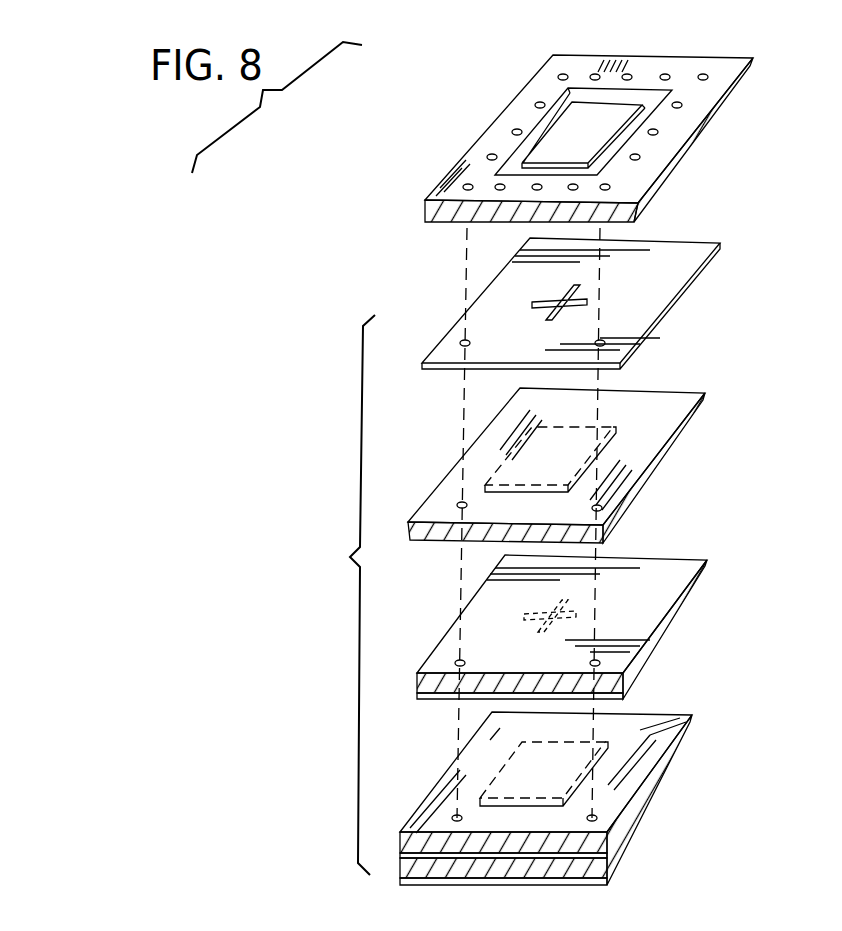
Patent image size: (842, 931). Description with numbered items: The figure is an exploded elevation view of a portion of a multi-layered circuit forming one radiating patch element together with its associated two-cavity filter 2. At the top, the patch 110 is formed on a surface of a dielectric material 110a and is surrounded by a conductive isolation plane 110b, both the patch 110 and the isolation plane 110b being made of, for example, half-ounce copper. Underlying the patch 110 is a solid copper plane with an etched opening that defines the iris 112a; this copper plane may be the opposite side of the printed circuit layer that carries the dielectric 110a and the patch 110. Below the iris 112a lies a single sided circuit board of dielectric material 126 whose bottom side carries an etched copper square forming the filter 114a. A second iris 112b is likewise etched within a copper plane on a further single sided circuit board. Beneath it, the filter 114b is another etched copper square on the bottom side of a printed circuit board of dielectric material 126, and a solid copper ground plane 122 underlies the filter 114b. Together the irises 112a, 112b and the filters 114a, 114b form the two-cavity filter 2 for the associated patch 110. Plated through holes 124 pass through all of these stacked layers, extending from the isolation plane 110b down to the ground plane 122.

The cavity filter 2 is at (301, 595).
The patch 110 is at (540, 143).
The dielectric material 110a is at (426, 210).
The conductive isolation plane 110b is at (477, 143).
The iris 112a is at (580, 293).
The second iris 112b is at (580, 618).
The filter 114a is at (627, 443).
The filter 114b is at (692, 768).
The ground plane 122 is at (653, 820).
The plated through holes 124 is at (658, 132).
The dielectric material 126 is at (660, 402).